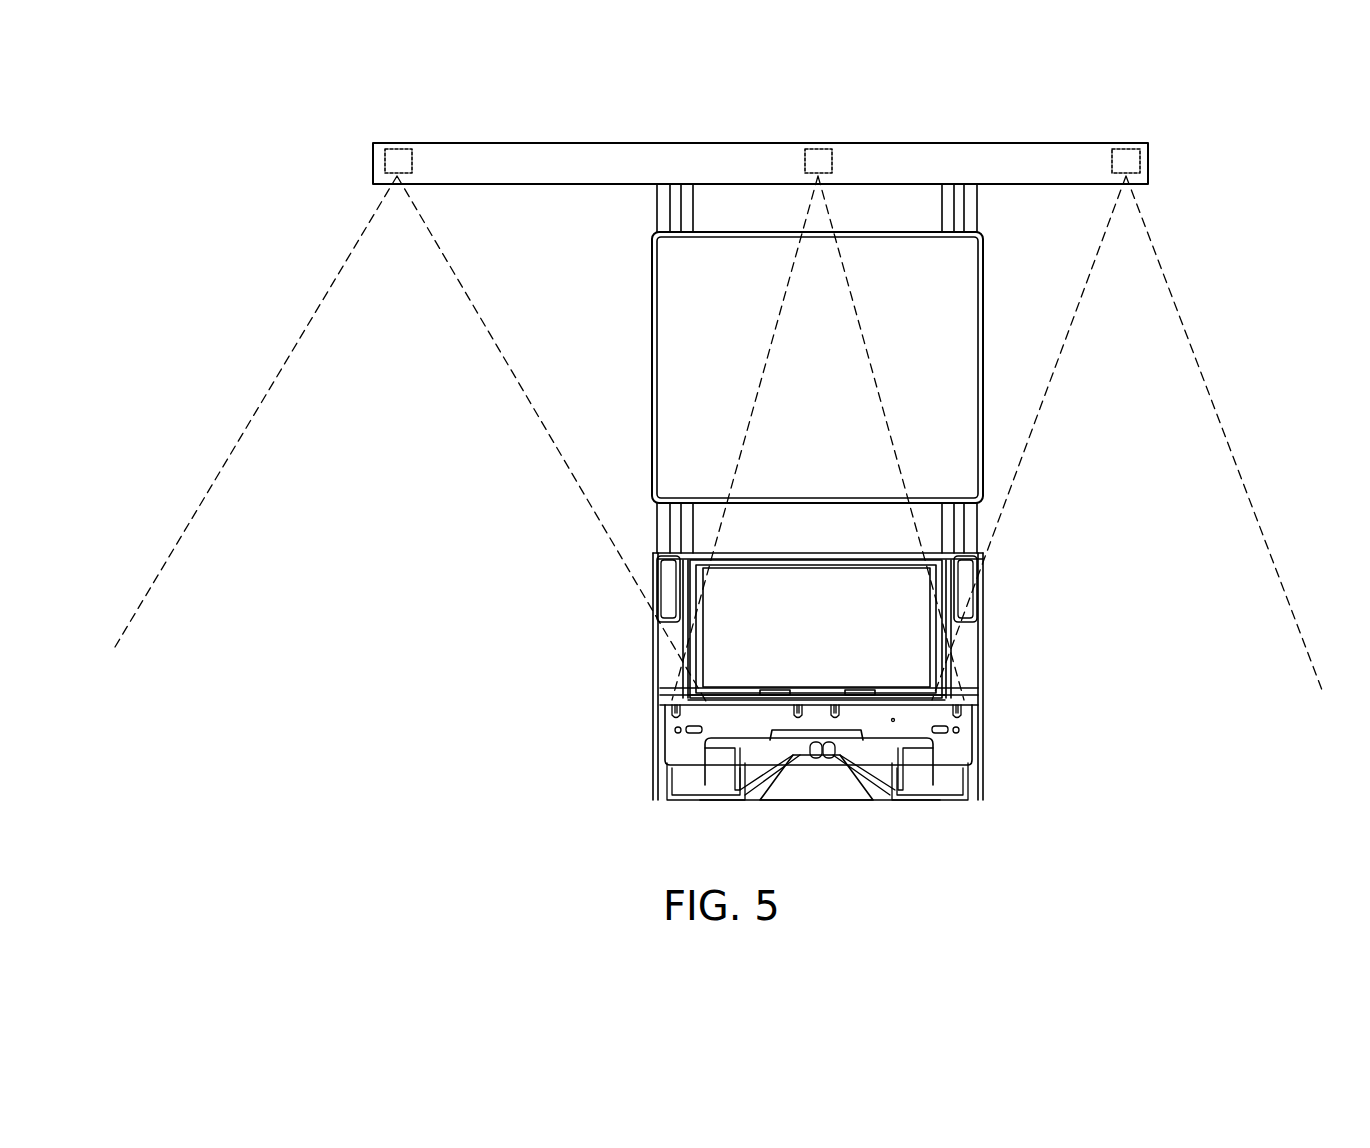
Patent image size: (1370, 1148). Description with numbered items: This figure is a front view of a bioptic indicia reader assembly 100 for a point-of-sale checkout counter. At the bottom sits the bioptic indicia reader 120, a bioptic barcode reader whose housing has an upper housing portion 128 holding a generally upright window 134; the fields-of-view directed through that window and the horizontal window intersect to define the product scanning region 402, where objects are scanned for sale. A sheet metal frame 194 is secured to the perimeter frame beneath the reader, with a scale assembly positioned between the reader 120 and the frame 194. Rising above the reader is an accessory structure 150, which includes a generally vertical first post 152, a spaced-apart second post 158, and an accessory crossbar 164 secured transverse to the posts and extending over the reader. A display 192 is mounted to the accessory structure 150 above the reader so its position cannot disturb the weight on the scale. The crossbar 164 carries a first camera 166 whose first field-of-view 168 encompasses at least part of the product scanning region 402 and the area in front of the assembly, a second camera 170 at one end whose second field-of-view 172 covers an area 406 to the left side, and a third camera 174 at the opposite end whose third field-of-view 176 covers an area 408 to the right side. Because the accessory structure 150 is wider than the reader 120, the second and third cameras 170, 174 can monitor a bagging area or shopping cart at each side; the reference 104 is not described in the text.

The bioptic indicia reader assembly 100 is at (286, 112).
The front axle 104 is at (815, 785).
The bioptic indicia reader 120 is at (1012, 729).
The upper housing portion 128 is at (982, 640).
The upright window 134 is at (912, 582).
The accessory structure 150 is at (628, 222).
The first post 152 is at (668, 537).
The second post 158 is at (960, 527).
The accessory crossbar 164 is at (982, 172).
The first camera 166 is at (812, 149).
The first field-of-view 168 is at (800, 225).
The second camera 170 is at (398, 149).
The second field-of-view 172 is at (333, 277).
The third camera 174 is at (1118, 149).
The third field-of-view 176 is at (1177, 310).
The display 192 is at (652, 303).
The sheet metal frame 194 is at (700, 726).
The product scanning region 402 is at (843, 636).
The area to a side of the assembly 406 is at (437, 449).
The area to a side of the assembly 408 is at (1154, 469).